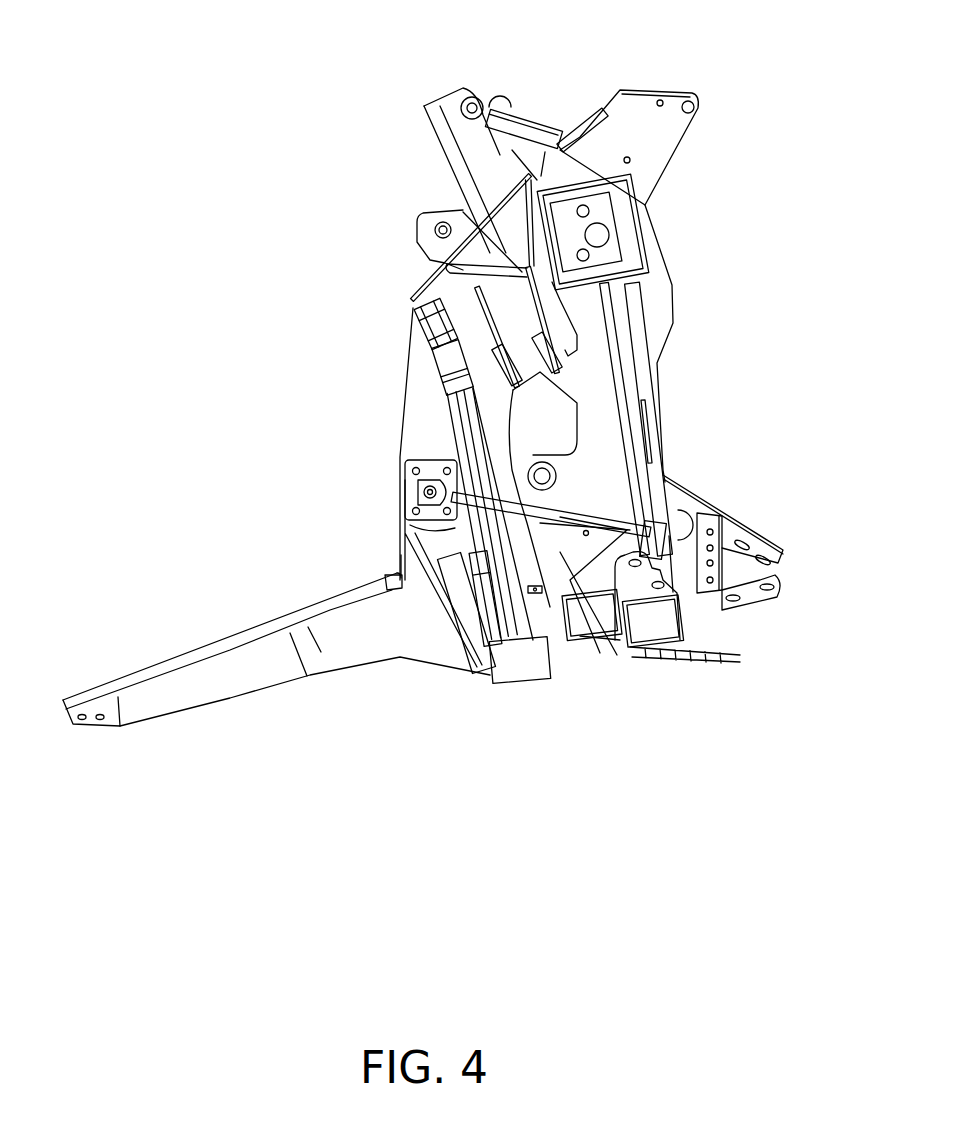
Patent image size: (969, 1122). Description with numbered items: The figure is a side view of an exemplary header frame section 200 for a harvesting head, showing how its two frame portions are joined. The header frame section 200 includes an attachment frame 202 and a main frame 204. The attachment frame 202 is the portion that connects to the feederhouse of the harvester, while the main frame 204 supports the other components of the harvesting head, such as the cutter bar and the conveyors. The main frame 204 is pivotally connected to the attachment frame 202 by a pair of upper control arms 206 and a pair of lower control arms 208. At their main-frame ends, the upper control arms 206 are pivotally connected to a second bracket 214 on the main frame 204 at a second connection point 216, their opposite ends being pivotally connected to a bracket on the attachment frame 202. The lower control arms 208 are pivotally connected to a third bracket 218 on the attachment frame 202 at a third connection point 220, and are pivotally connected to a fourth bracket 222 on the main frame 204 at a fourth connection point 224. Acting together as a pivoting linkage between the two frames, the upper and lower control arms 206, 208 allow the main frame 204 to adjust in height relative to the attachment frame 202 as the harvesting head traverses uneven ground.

The header frame section 200 is at (171, 146).
The attachment frame 202 is at (670, 340).
The main frame 204 is at (406, 405).
The upper control arms 206 is at (518, 123).
The lower control arms 208 is at (595, 627).
The second bracket 214 is at (430, 134).
The second connection point 216 is at (470, 93).
The third bracket 218 is at (727, 570).
The third connection point 220 is at (722, 520).
The fourth bracket 222 is at (413, 478).
The fourth connection point 224 is at (420, 494).